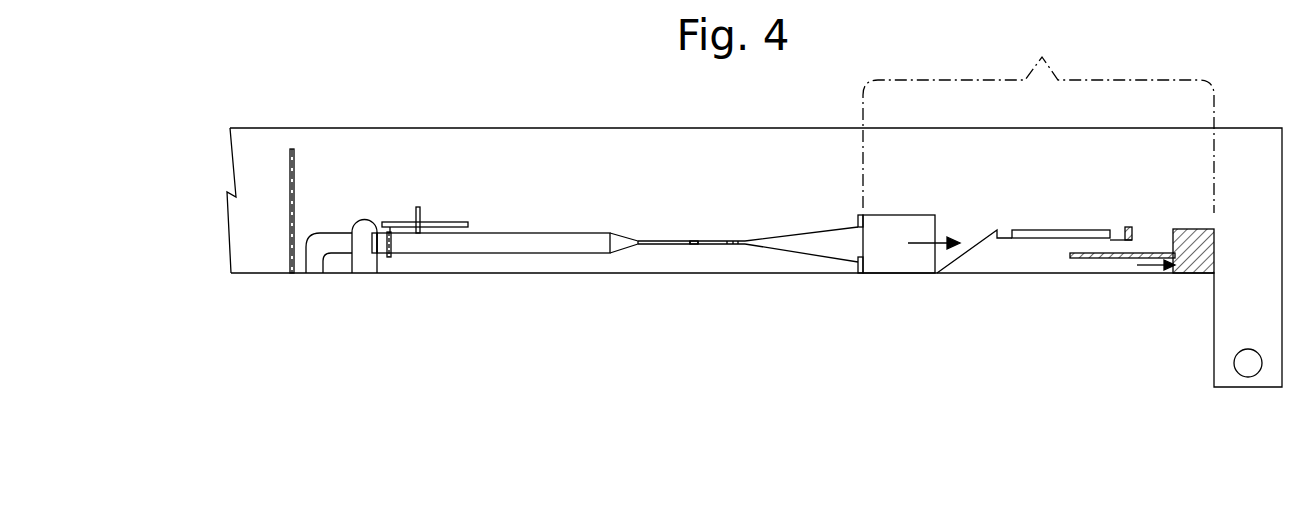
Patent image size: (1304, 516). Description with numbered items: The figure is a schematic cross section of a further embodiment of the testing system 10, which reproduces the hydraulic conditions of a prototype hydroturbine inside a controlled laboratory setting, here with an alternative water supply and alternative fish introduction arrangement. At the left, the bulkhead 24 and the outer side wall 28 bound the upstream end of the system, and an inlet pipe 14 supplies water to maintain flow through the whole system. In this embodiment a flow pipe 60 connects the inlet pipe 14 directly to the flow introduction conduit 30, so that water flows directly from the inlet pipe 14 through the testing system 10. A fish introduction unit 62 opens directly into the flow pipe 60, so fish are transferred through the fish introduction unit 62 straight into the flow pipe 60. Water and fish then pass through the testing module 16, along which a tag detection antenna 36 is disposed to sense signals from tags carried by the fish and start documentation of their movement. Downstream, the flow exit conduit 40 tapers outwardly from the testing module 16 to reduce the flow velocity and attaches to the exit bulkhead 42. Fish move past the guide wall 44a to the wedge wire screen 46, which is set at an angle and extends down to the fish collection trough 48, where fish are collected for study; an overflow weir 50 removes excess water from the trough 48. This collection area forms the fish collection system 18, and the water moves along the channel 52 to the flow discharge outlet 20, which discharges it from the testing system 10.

The testing system 10 is at (820, 324).
The inlet pipe 14 is at (315, 265).
The testing module 16 is at (645, 245).
The fish collection system 18 is at (1038, 118).
The flow discharge outlet 20 is at (1247, 378).
The bulkhead 24 is at (288, 230).
The testing system outer wall 28 is at (308, 192).
The flow introduction conduit 30 is at (623, 244).
The tag detection antenna 36 is at (698, 246).
The flow exit conduit 40 is at (787, 243).
The exit bulkhead 42 is at (857, 258).
The guide wall 44a is at (892, 258).
The screen 46 is at (973, 250).
The fish collection trough 48 is at (1027, 239).
The overflow weir 50 is at (1129, 227).
The channel 52 is at (1115, 268).
The flow pipe 60 is at (415, 247).
The fish introduction unit 62 is at (422, 222).